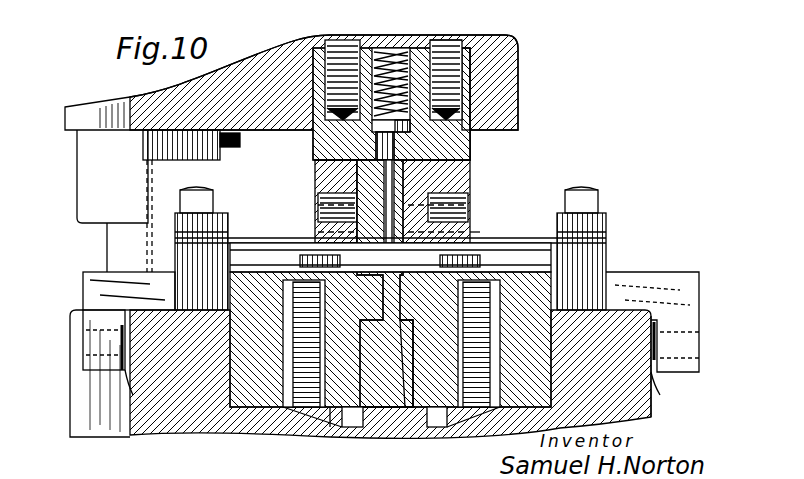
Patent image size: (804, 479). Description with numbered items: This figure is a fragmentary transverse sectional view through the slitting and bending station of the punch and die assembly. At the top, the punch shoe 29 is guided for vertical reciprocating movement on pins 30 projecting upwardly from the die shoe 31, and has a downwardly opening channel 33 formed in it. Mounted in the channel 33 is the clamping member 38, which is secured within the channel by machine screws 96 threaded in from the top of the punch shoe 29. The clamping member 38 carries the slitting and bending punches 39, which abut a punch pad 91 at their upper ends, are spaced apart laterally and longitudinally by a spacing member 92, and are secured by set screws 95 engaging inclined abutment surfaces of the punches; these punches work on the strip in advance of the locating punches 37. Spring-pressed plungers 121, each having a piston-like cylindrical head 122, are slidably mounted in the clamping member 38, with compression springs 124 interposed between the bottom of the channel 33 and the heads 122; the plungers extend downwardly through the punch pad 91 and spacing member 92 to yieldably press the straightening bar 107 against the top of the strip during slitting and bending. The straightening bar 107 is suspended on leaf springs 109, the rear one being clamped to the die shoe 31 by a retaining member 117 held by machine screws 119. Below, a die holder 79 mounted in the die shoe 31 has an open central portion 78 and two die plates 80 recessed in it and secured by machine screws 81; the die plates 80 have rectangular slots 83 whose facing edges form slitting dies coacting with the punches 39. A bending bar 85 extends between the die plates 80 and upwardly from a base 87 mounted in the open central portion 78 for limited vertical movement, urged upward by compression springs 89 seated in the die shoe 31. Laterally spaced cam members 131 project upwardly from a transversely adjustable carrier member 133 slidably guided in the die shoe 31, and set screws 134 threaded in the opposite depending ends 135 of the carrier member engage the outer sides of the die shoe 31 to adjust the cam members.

The punch shoe 29 is at (515, 66).
The pin 30 is at (107, 243).
The die shoe 31 is at (76, 426).
The channel 33 is at (466, 96).
The locating punch 37 is at (640, 402).
The clamping member 38 is at (470, 118).
The slitting and bending punch 39 is at (330, 193).
The open central portion 78 is at (330, 427).
The die holder 79 is at (545, 292).
The die plate 80 is at (238, 238).
The machine screw 81 is at (248, 243).
The rectangular slot 83 is at (362, 428).
The bending bar 85 is at (385, 330).
The base 87 is at (410, 330).
The compression spring 89 is at (446, 20).
The punch pad 91 is at (440, 168).
The spacing member 92 is at (345, 168).
The set screw 95 is at (322, 203).
The machine screw 96 is at (340, 45).
The straightening bar 107 is at (340, 228).
The leaf spring 109 is at (485, 232).
The retaining member 117 is at (592, 222).
The machine screw 119 is at (184, 200).
The spring-pressed plunger 121 is at (395, 144).
The cylindrical head 122 is at (380, 128).
The compression spring 124 is at (386, 50).
The cam member 131 is at (245, 263).
The carrier member 133 is at (672, 275).
The set screw 134 is at (128, 382).
The depending end 135 is at (86, 364).